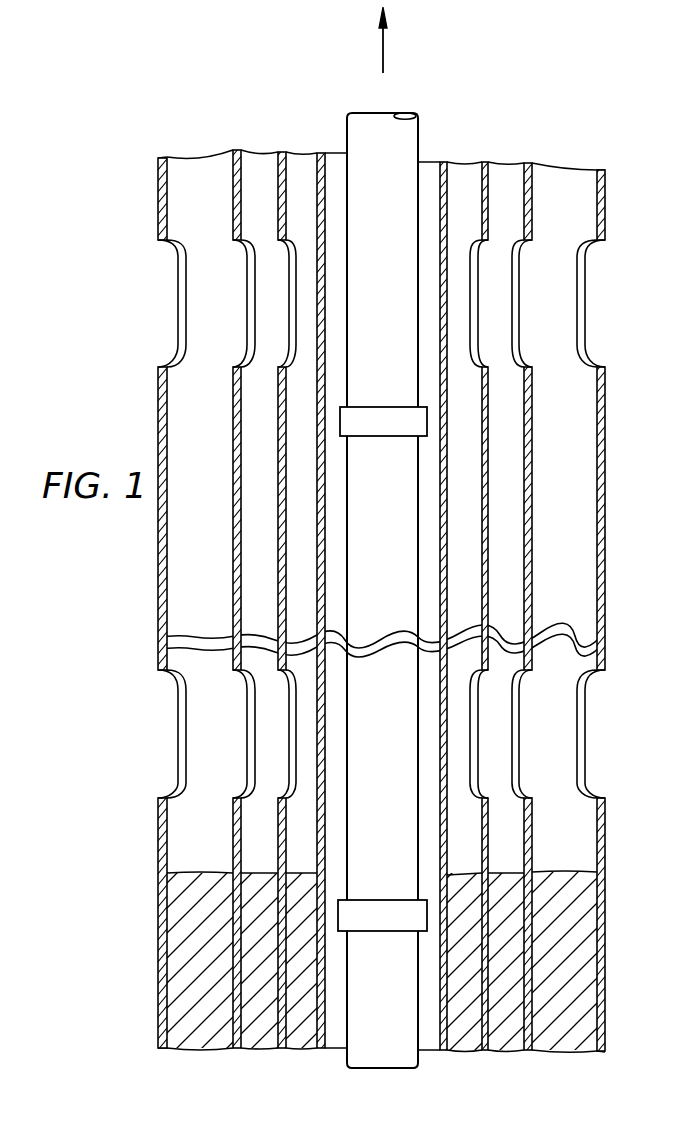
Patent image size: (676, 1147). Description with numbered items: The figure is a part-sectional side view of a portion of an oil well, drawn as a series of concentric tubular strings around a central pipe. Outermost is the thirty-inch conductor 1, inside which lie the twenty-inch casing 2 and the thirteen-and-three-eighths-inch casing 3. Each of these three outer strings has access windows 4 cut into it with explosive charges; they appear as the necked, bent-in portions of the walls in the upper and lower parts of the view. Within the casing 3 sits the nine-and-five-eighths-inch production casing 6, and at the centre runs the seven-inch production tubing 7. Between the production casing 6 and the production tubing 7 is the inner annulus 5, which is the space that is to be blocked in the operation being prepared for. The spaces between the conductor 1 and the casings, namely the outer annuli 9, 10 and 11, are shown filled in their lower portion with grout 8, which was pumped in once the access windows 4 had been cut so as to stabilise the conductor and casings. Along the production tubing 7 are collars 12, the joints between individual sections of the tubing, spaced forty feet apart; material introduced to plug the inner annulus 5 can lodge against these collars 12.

The conductor 1 is at (606, 432).
The casing 2 is at (533, 506).
The casing 3 is at (488, 580).
The access windows 4 is at (292, 300).
The inner annulus 5 is at (428, 197).
The production casing 6 is at (447, 490).
The production tubing 7 is at (418, 553).
The grout 8 is at (300, 1030).
The outer annulus 9 is at (187, 606).
The outer annulus 10 is at (253, 549).
The outer annulus 11 is at (303, 488).
The collars 12 is at (370, 418).